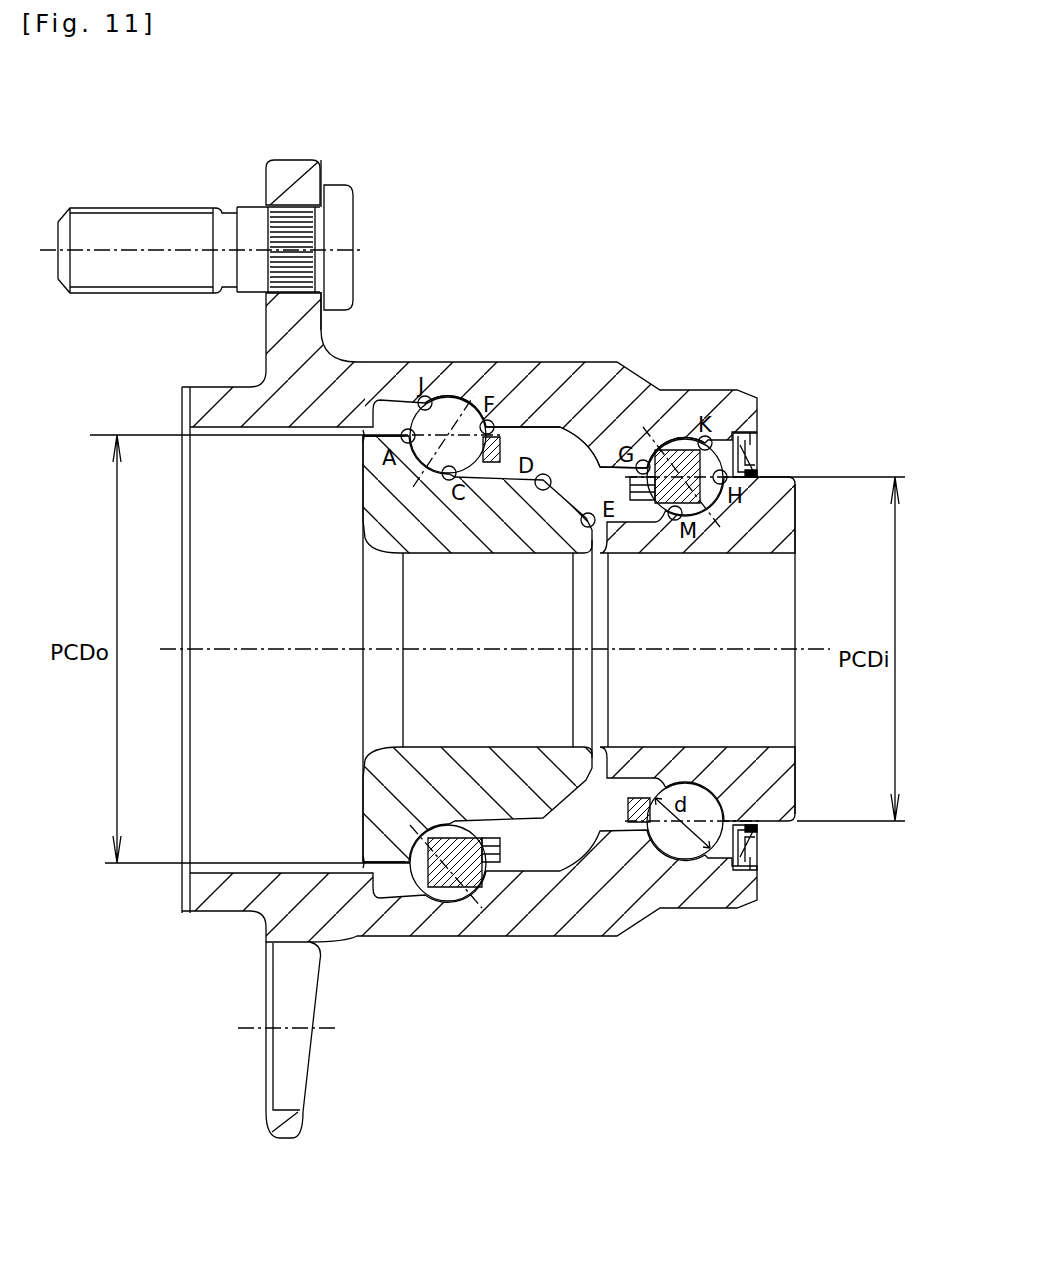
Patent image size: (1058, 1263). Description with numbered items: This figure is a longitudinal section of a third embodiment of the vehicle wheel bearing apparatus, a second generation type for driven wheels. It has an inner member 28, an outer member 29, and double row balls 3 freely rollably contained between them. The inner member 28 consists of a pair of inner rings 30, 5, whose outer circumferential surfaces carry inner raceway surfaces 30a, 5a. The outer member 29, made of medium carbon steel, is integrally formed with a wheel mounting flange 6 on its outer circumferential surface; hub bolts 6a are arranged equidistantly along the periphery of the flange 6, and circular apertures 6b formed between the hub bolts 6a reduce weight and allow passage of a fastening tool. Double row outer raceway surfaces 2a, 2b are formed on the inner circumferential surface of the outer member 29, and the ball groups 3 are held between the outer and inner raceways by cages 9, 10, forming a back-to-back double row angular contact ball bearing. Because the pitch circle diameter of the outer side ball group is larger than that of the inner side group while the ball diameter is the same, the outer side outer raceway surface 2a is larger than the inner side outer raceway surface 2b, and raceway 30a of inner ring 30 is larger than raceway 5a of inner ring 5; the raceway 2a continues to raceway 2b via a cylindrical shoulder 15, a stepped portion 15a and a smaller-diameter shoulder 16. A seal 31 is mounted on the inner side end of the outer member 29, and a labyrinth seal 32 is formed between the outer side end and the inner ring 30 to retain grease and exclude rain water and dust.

The outer side outer raceway surface 2a is at (432, 400).
The inner side outer raceway surface 2b is at (688, 437).
The balls 3 is at (672, 843).
The inner side inner ring 5 is at (740, 518).
The inner raceway surface of inner side inner ring 5a is at (760, 450).
The wheel mounting flange 6 is at (295, 183).
The hub bolts 6a is at (162, 240).
The circular apertures 6b is at (290, 947).
The cage 9 is at (470, 840).
The cage 10 is at (640, 800).
The cylindrical shoulder 15 is at (525, 450).
The stepped portion 15a is at (571, 442).
The shoulder 16 is at (610, 476).
The inner member 28 is at (258, 628).
The outer member 29 is at (545, 393).
The outer side inner ring 30 is at (415, 505).
The inner raceway surface of outer side inner ring 30a is at (372, 427).
The seal 31 is at (757, 855).
The labyrinth seal 32 is at (380, 870).